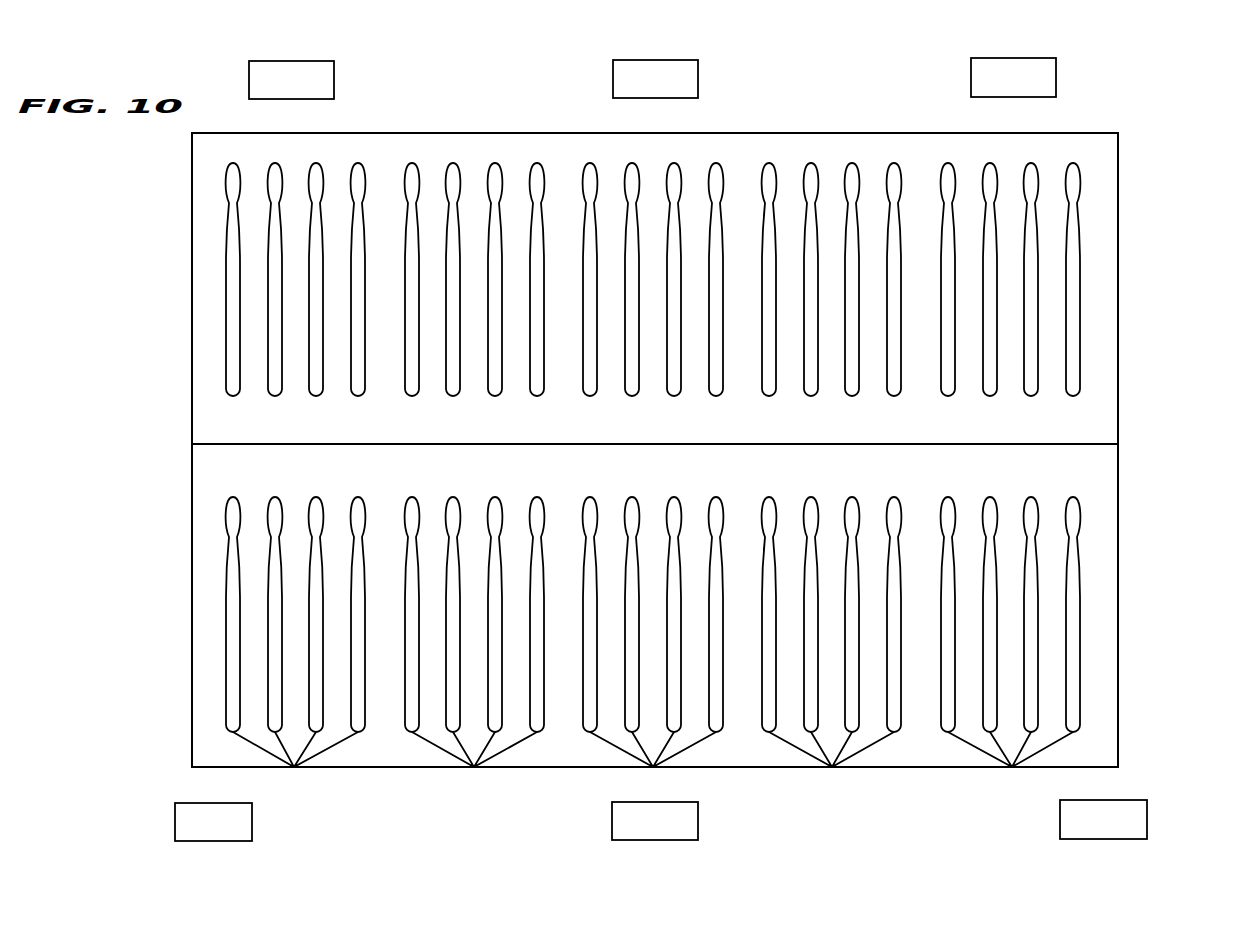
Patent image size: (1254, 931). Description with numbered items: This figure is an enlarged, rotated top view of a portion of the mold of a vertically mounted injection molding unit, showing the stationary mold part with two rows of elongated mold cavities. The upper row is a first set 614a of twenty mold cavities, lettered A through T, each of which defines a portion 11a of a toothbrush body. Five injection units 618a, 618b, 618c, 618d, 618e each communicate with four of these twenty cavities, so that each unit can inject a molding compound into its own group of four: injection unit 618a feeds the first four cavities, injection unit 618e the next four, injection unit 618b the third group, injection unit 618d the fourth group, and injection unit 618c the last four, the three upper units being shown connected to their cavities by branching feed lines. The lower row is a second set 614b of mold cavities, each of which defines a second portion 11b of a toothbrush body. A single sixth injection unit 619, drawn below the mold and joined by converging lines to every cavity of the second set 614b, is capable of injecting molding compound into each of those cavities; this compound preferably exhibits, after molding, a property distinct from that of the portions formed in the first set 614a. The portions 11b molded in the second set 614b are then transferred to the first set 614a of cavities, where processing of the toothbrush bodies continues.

The injection unit 618a is at (360, 165).
The injection unit 618b is at (717, 165).
The injection unit 618c is at (1075, 165).
The injection unit 618d is at (1095, 767).
The injection unit 618e is at (221, 767).
The sixth injection unit 619 is at (294, 767).
The portion of a toothbrush body 11a is at (228, 288).
The second portion of a toothbrush body 11b is at (228, 627).
The first set of mold cavities 614a is at (1092, 336).
The second set of mold cavities 614b is at (1092, 551).